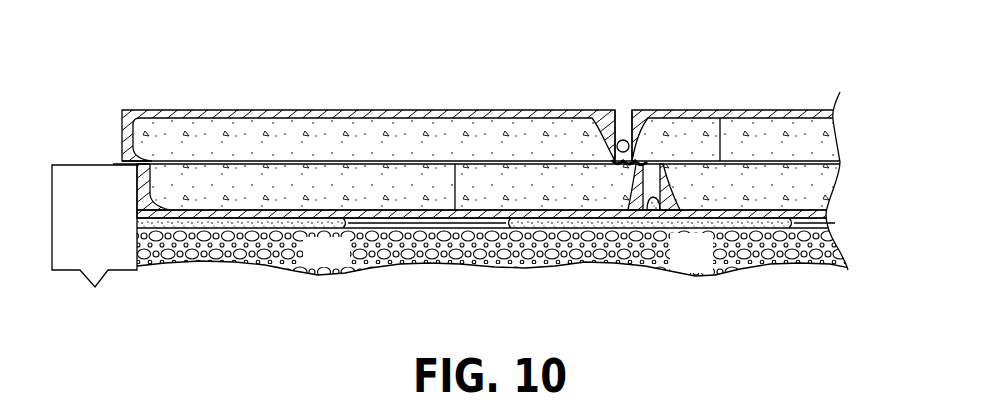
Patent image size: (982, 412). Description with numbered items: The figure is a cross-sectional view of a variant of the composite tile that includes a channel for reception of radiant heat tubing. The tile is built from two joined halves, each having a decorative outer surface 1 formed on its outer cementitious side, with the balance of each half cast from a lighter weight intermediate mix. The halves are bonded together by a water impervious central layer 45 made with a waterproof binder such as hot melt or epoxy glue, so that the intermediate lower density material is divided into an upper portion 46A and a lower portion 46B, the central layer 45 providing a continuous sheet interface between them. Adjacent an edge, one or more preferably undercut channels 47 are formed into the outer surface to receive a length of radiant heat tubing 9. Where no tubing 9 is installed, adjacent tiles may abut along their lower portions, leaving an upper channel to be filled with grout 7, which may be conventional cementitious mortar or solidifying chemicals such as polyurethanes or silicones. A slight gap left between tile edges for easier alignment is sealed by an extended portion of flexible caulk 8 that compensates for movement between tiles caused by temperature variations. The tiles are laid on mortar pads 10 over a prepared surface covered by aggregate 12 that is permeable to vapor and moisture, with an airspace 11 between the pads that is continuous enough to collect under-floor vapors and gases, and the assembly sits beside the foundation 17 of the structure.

The outer surface 1 is at (440, 110).
The grout 7 is at (622, 128).
The flexible caulk 8 is at (623, 163).
The radiant heat tubing 9 is at (614, 142).
The mortar pad 10 is at (218, 222).
The airspace 11 is at (437, 222).
The aggregate 12 is at (343, 264).
The foundation 17 is at (78, 188).
The central layer 45 is at (720, 118).
The upper portion 46A is at (760, 140).
The lower portion 46B is at (800, 185).
The undercut channel 47 is at (140, 187).